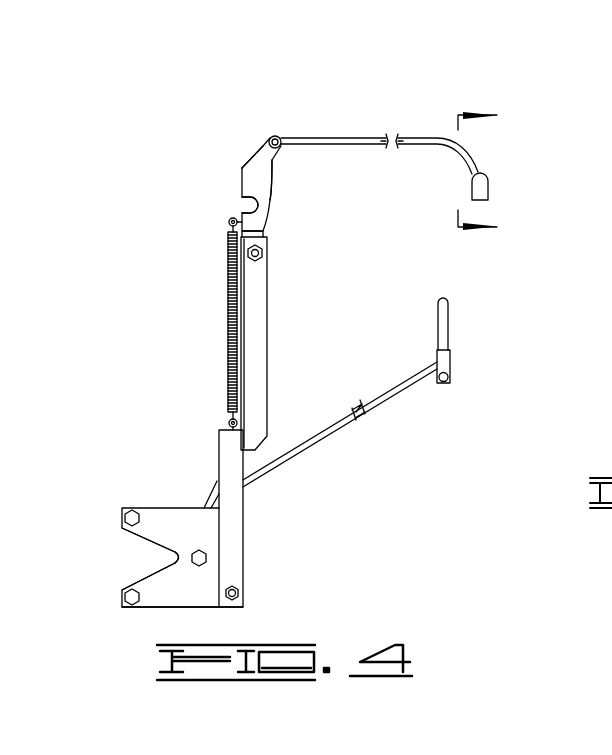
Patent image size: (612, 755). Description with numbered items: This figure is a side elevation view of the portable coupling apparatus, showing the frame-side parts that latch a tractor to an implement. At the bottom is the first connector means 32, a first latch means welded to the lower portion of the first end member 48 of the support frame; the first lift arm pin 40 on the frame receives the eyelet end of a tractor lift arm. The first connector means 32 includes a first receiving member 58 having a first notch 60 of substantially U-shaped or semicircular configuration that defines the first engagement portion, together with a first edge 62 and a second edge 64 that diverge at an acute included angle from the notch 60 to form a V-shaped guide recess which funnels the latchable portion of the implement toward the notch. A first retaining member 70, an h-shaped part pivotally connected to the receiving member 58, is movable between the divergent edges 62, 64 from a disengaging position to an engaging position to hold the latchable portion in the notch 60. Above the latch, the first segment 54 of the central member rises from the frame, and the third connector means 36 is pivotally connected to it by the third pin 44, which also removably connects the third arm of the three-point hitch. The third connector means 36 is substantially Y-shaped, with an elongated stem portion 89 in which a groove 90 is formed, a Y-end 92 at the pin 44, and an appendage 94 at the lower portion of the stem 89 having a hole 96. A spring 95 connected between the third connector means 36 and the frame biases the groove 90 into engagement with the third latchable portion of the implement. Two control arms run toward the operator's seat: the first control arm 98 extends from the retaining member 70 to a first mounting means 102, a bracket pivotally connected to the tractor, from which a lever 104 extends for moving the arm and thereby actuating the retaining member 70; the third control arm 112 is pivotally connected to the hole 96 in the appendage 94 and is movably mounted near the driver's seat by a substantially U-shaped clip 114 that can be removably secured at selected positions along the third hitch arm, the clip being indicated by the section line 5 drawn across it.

The section line 5- 5 is at (486, 170).
The first connector means 32 is at (128, 620).
The third connector means 36 is at (238, 176).
The first lift arm pin 40 is at (242, 592).
The third pin 44 is at (260, 256).
The first end member 48 is at (237, 522).
The first segment 54 is at (263, 347).
The first receiving member 58 is at (173, 504).
The first notch 60 is at (179, 560).
The first edge 62 is at (150, 540).
The second edge 64 is at (140, 580).
The first retaining member 70 is at (212, 488).
The elongated stem portion 89 is at (270, 176).
The groove 90 is at (240, 205).
The Y-end 92 is at (262, 232).
The appendage 94 is at (260, 150).
The spring 95 is at (228, 316).
The hole 96 is at (272, 133).
The first control arm 98 is at (337, 418).
The first mounting means 102 is at (452, 366).
The lever 104 is at (448, 310).
The third control arm 112 is at (346, 136).
The U-shaped clip 114 is at (488, 182).